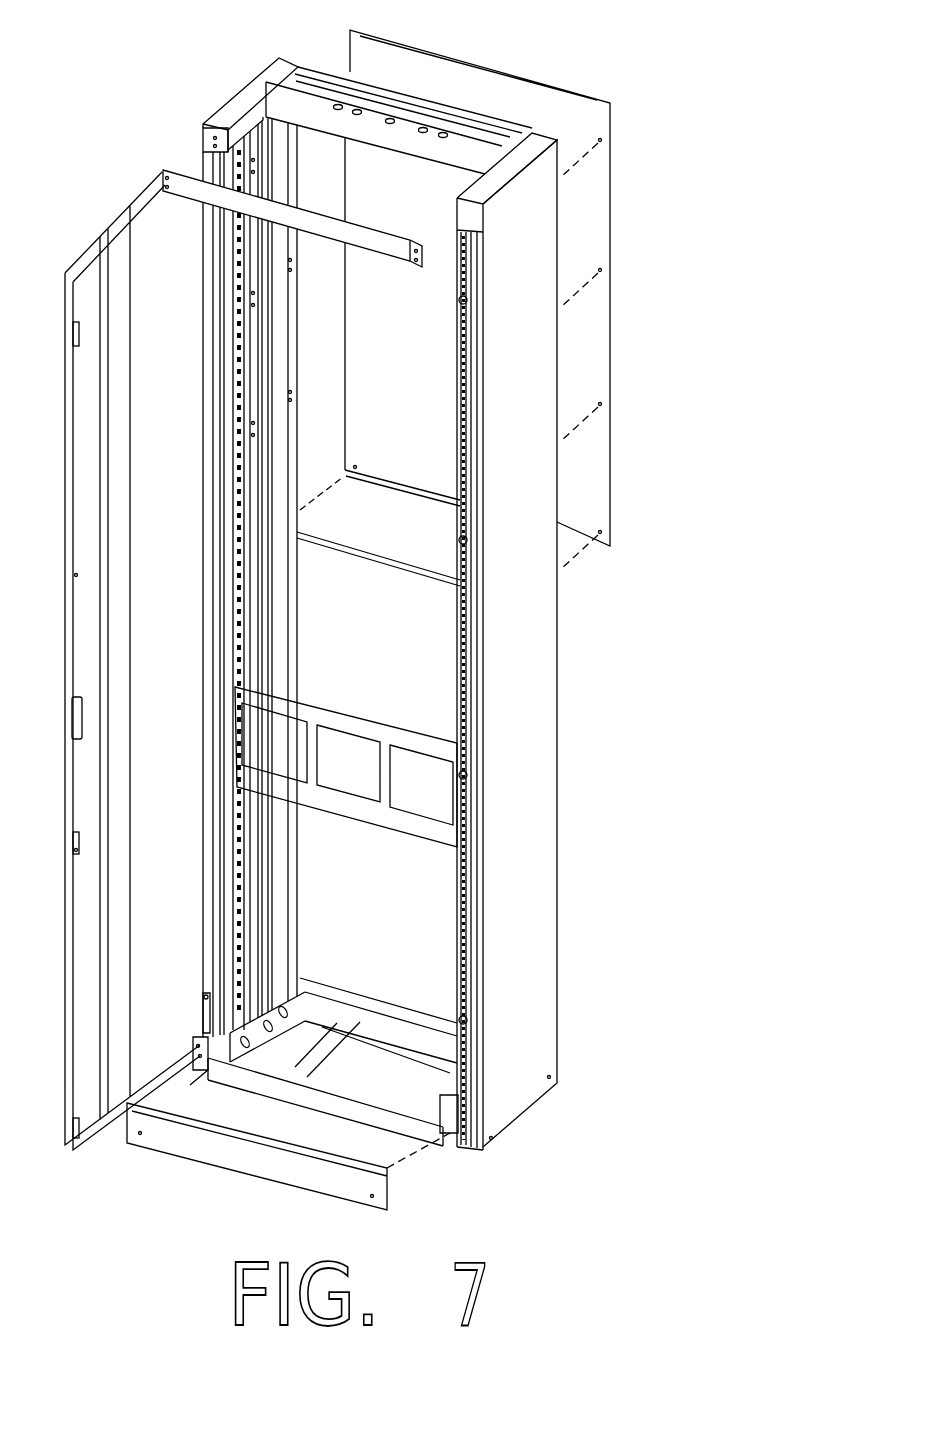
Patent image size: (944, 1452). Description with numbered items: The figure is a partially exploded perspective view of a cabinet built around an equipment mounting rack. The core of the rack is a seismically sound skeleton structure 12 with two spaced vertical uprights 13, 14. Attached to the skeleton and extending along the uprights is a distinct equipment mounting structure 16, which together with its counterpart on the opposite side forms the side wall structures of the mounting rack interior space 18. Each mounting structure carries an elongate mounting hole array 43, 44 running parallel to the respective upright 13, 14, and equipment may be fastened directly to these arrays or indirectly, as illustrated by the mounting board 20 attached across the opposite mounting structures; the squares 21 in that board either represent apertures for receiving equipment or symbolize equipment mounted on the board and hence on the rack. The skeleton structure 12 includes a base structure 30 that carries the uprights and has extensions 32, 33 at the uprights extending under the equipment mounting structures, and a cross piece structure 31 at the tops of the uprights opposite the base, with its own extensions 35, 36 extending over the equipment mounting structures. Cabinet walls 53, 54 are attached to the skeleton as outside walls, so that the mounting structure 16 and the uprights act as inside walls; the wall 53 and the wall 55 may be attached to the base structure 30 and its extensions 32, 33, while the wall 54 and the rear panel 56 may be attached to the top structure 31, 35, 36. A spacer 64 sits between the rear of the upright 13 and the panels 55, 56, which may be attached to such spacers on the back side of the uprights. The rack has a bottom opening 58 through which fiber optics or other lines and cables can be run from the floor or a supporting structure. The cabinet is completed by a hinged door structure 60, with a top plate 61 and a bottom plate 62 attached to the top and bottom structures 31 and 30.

The skeleton structure 12 is at (290, 93).
The vertical upright 13 is at (272, 445).
The vertical upright 14 is at (450, 395).
The equipment mounting structure 16 is at (252, 345).
The mounting rack interior space 18 is at (392, 895).
The mounting board 20 is at (420, 728).
The squares 21 is at (400, 747).
The base structure 30 is at (400, 1032).
The cross piece structure 31 is at (460, 142).
The extension 32 is at (295, 1002).
The extension 33 is at (455, 1135).
The extension 35 is at (250, 105).
The extension 36 is at (513, 157).
The mounting hole array 43 is at (237, 610).
The mounting hole array 44 is at (460, 610).
The cabinet wall 53 is at (200, 137).
The cabinet wall 54 is at (515, 875).
The cabinet wall 55 is at (333, 537).
The cabinet wall 56 is at (415, 45).
The bottom opening 58 is at (392, 1088).
The hinged door structure 60 is at (193, 416).
The top plate 61 is at (193, 188).
The bottom plate 62 is at (205, 1142).
The spacer 64 is at (297, 295).